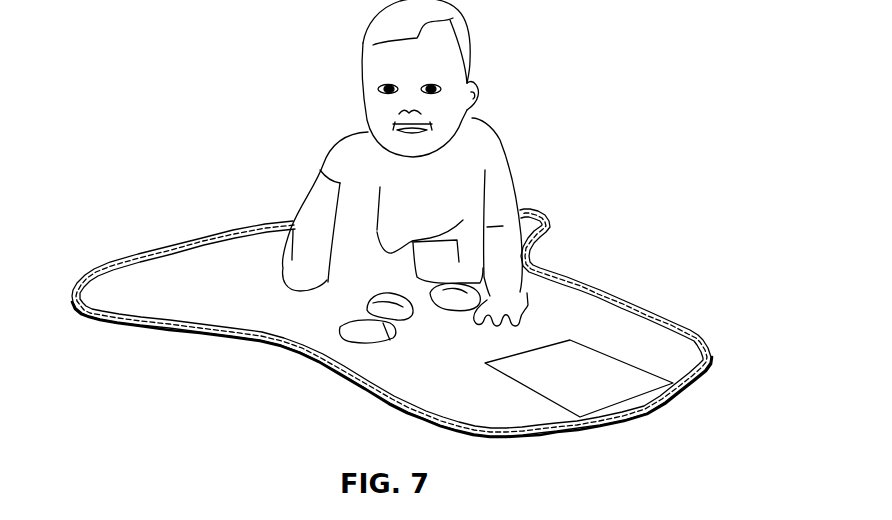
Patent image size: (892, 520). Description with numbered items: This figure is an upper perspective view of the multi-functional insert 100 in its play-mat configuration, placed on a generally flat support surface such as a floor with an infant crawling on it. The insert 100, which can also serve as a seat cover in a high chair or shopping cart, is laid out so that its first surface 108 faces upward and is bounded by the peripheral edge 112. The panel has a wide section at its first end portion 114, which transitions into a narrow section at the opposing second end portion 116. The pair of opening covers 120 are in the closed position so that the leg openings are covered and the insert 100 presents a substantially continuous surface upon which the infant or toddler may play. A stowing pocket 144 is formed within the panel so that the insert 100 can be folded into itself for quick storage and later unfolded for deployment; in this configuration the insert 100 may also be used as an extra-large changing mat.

The multi-functional insert 100 is at (398, 340).
The first surface 108 is at (218, 290).
The peripheral edge 112 is at (235, 342).
The first end portion 114 is at (108, 294).
The second end portion 116 is at (676, 350).
The opening covers 120 is at (453, 297).
The stowing pocket 144 is at (610, 399).